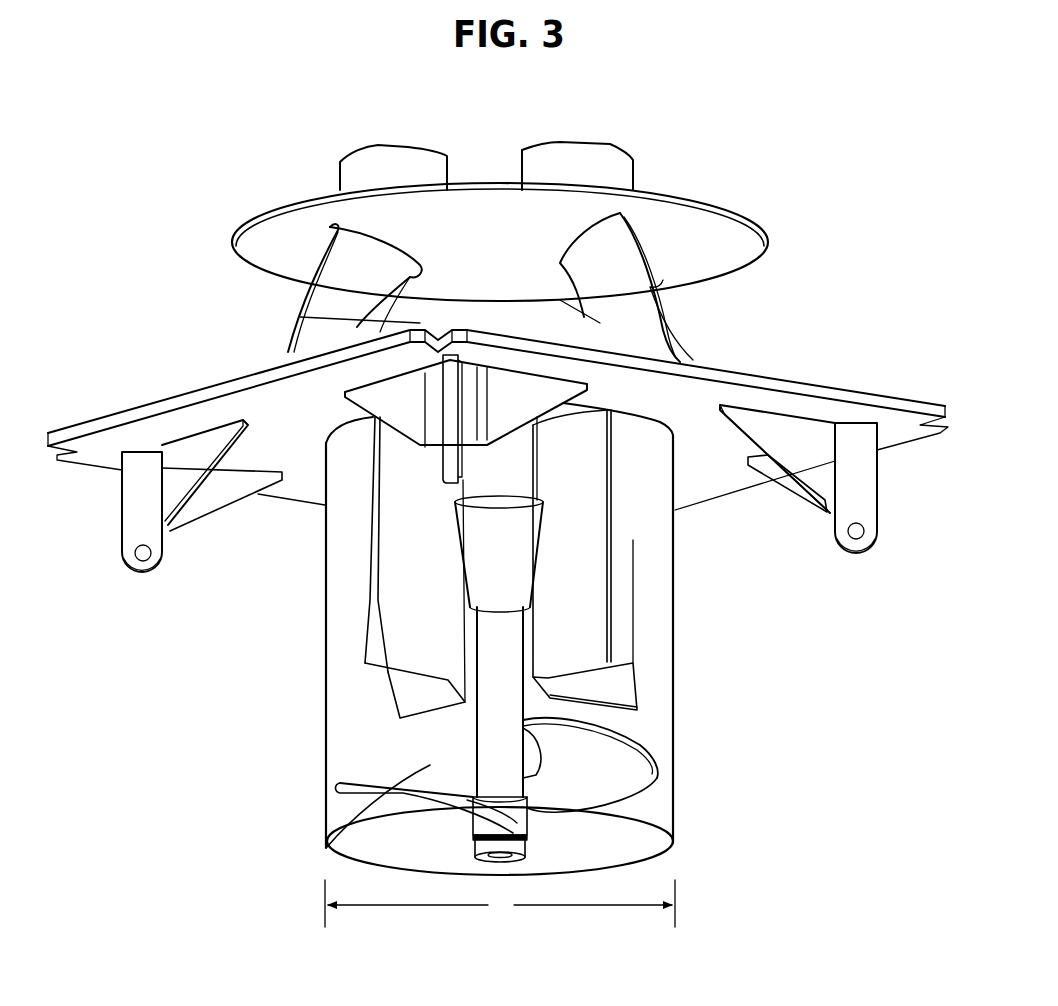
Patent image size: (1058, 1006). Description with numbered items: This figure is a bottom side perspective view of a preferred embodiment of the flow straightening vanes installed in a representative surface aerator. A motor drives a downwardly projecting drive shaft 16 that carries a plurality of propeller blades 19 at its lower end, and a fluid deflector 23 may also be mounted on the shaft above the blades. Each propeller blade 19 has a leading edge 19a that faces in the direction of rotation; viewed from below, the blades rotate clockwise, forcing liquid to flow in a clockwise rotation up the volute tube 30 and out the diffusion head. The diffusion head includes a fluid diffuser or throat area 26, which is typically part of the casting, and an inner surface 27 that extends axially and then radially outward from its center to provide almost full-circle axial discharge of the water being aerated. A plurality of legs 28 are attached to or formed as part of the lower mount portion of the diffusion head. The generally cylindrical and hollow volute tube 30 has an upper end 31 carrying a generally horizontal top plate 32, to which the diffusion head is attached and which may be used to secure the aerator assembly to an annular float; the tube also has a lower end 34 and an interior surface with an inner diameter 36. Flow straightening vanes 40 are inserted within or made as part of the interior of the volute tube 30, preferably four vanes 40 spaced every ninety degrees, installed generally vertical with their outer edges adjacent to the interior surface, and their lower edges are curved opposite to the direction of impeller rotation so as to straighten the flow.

The drive shaft 16 is at (493, 727).
The propeller blades 19 is at (430, 773).
The leading edge 19a is at (630, 745).
The fluid deflector 23 is at (490, 550).
The fluid diffuser or throat area 26 is at (452, 229).
The inner surface 27 is at (420, 303).
The legs 28 is at (647, 337).
The volute tube 30 is at (547, 639).
The upper end 31 is at (673, 436).
The top plate 32 is at (887, 400).
The lower end 34 is at (675, 845).
The inner diameter 36 is at (500, 903).
The flow straightening vanes 40 is at (395, 648).